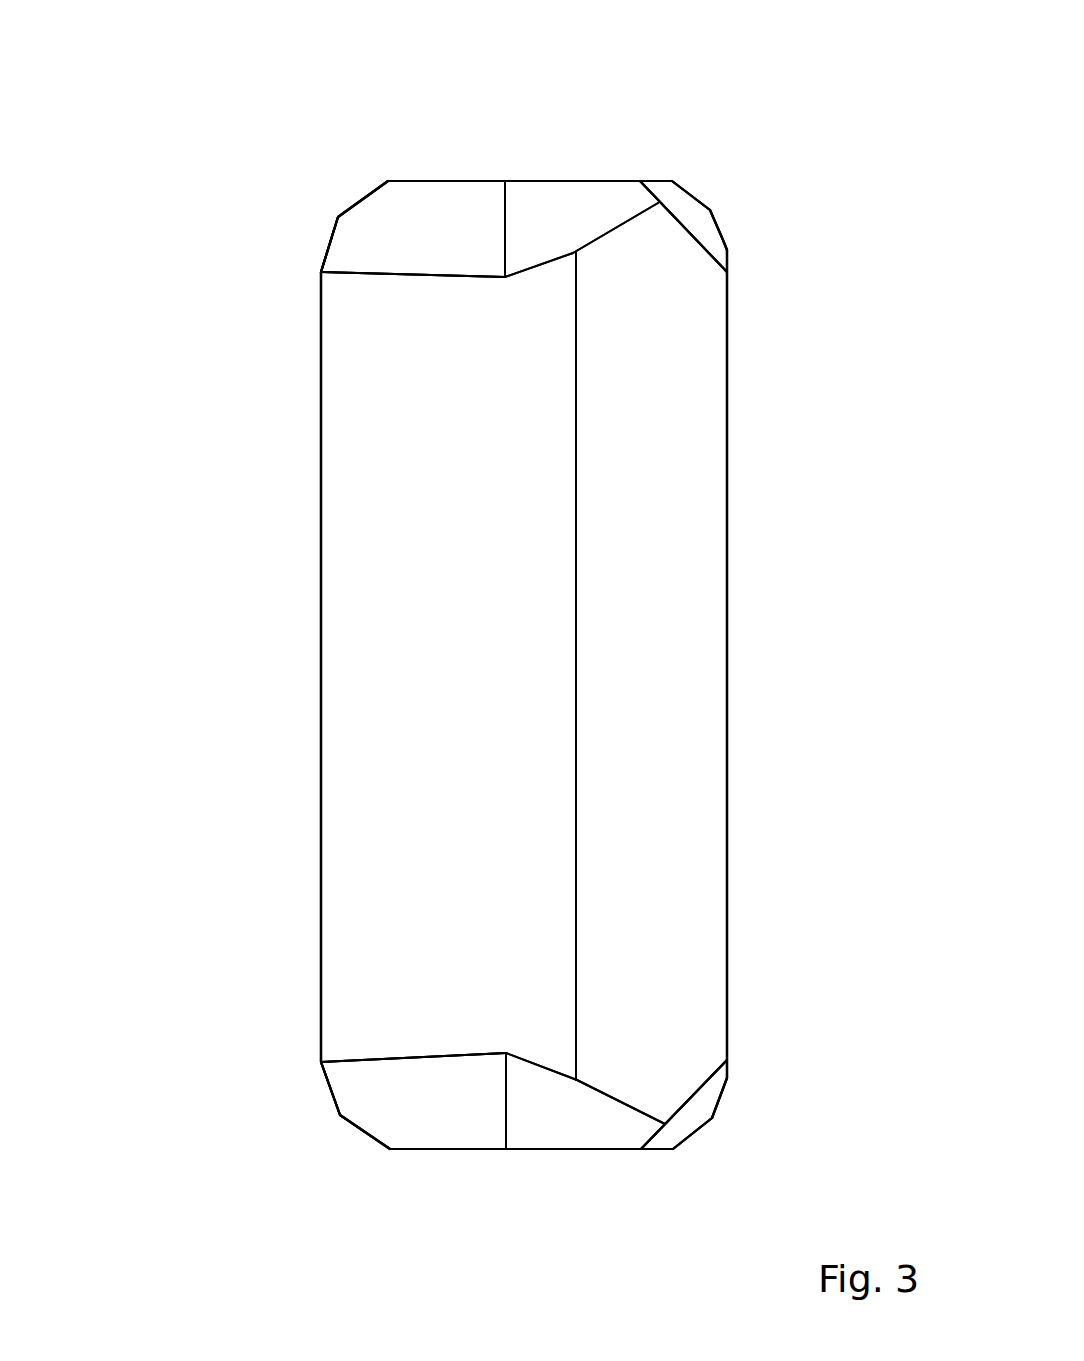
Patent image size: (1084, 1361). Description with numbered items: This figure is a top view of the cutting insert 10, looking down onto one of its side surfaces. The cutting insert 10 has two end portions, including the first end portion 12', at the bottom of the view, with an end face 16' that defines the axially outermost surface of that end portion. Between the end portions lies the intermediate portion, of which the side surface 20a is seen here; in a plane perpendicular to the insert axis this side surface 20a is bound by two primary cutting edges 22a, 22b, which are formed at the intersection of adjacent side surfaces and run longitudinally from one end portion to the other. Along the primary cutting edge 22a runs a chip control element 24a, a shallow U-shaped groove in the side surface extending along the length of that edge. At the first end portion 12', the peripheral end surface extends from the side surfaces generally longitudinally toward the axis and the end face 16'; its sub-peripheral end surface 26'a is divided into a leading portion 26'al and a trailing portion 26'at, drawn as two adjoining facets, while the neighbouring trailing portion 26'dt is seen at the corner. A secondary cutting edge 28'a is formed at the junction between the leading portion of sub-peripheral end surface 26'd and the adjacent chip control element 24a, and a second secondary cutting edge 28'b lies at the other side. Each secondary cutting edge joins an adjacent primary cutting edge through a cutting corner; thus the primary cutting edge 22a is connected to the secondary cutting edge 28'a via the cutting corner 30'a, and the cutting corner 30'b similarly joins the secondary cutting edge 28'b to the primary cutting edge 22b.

The cutting insert 10 is at (820, 107).
The first end portion 12' is at (431, 1120).
The end face 16' is at (540, 1193).
The side surface 20a is at (398, 760).
The primary cutting edge 22a is at (728, 668).
The primary cutting edge 22b is at (320, 515).
The chip control element 24a is at (692, 465).
The sub-peripheral end surface 26'a is at (413, 1153).
The leading portion 26'al is at (371, 1157).
The trailing portion 26'at is at (531, 1186).
The trailing portion 26'dt is at (713, 1141).
The secondary cutting edge 28'a is at (669, 1101).
The secondary cutting edge 28'b is at (304, 1144).
The cutting corner 30'a is at (758, 1084).
The cutting corner 30'b is at (349, 1032).